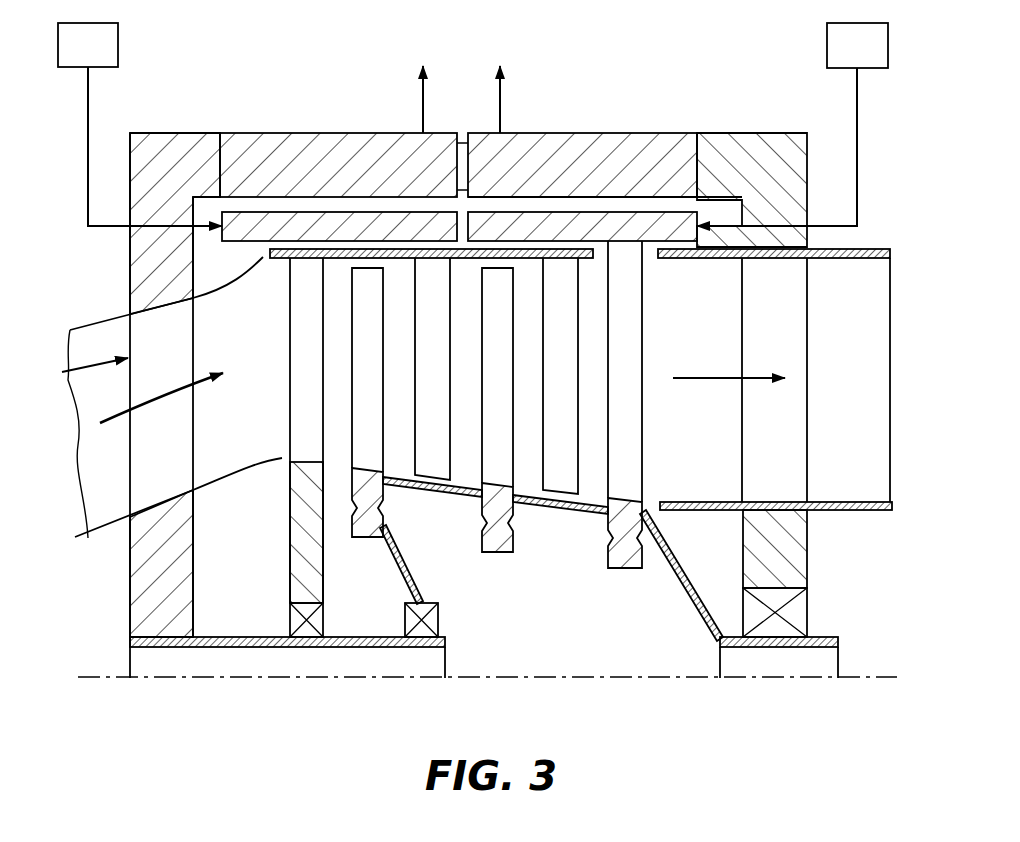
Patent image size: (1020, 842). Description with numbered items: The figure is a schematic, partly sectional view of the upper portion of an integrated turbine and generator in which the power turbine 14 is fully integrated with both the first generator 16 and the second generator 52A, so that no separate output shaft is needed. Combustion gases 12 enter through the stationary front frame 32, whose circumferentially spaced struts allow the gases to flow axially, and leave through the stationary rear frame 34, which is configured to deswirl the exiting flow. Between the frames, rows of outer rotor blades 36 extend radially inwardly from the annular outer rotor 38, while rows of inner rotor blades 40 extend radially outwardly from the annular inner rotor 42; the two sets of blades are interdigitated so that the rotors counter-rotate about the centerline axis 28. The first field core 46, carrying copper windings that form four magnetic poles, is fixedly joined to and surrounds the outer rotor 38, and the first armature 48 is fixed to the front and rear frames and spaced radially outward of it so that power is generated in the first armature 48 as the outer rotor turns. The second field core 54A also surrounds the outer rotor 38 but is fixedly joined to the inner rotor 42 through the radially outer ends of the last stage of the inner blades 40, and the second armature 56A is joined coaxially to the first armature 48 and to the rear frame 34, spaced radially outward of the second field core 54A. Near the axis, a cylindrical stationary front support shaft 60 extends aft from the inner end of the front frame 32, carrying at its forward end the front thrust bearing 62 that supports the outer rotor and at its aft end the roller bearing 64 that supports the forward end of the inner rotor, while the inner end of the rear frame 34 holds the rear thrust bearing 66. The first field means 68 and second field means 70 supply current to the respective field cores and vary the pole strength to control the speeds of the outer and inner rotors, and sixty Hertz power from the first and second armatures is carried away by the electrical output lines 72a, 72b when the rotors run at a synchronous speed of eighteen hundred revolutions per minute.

The combustion gases 12 is at (167, 390).
The power turbine 14 is at (532, 645).
The first generator 16 is at (293, 364).
The centerline axis 28 is at (655, 678).
The front frame 32 is at (160, 397).
The rear frame 34 is at (807, 310).
The outer rotor blades 36 is at (288, 302).
The outer rotor 38 is at (465, 258).
The inner rotor blades 40 is at (350, 362).
The inner rotor 42 is at (556, 508).
The first field core 46 is at (390, 212).
The first armature 48 is at (290, 133).
The second generator 52A is at (577, 127).
The second field core 54A is at (628, 212).
The second armature 56A is at (543, 133).
The front support shaft 60 is at (237, 636).
The front thrust bearing 62 is at (323, 612).
The roller bearing 64 is at (438, 618).
The rear thrust bearing 66 is at (808, 610).
The first field means 68 is at (140, 124).
The second field means 70 is at (792, 124).
The electrical output line 72a is at (425, 90).
The electrical output line 72b is at (500, 95).